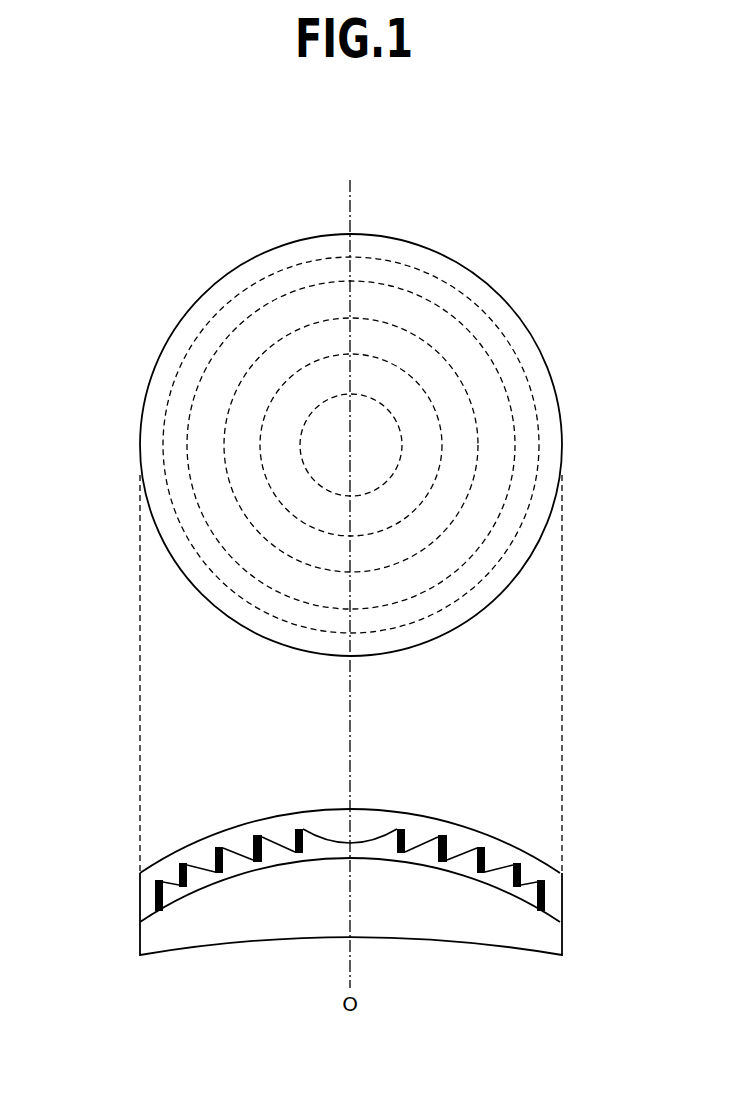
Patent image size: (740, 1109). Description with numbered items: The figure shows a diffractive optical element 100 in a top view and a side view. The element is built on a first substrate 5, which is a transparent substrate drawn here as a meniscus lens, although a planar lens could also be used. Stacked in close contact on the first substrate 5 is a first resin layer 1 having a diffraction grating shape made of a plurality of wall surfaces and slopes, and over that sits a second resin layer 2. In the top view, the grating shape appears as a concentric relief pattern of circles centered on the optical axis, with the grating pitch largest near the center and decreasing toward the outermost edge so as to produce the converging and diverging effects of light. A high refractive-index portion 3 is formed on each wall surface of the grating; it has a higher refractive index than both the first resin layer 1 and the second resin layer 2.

The diffractive optical element 100 is at (73, 182).
The first resin layer 1 is at (426, 860).
The second resin layer 2 is at (418, 830).
The high refractive-index portion 3 is at (157, 892).
The first substrate 5 is at (182, 937).